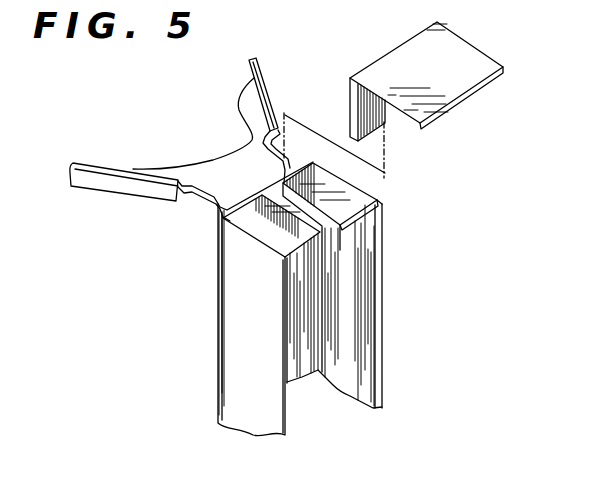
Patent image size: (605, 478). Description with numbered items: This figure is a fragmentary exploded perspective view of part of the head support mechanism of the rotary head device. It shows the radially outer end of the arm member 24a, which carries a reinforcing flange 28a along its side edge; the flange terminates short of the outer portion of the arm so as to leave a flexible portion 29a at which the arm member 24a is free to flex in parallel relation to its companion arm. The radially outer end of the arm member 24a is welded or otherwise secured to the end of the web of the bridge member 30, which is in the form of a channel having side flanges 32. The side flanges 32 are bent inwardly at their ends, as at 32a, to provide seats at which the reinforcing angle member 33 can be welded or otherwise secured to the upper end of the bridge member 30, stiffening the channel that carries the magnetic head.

The arm member 24a is at (194, 170).
The reinforcing flange 28a is at (93, 181).
The flexible portion 29a is at (213, 175).
The bridge member 30 is at (303, 379).
The side flange 32 is at (296, 315).
The inwardly bent end 32a is at (268, 222).
The reinforcing angle member 33 is at (463, 62).